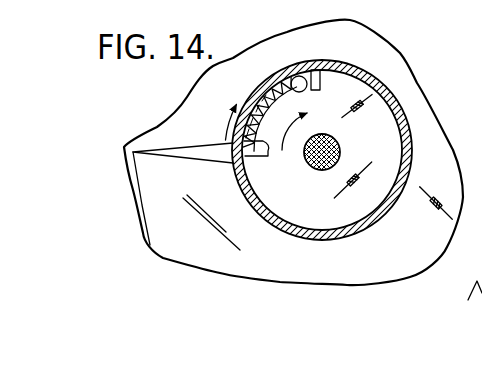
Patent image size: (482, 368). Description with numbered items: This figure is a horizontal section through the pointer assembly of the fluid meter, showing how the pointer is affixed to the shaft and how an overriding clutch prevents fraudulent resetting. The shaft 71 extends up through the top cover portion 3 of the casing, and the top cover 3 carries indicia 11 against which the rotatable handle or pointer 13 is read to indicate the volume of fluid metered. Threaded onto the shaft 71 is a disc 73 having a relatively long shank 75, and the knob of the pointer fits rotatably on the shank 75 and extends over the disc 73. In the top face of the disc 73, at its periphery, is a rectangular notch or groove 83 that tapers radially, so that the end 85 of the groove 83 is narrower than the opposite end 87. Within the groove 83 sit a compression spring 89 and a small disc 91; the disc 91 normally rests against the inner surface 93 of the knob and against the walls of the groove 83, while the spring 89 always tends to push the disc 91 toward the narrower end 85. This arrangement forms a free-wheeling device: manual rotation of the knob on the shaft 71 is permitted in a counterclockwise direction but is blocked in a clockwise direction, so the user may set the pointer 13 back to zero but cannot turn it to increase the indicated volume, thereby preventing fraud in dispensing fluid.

The top cover portion 3 is at (221, 261).
The indicia 11 is at (170, 217).
The pointer 13 is at (187, 155).
The shaft 71 is at (312, 168).
The disc 73 is at (345, 213).
The shank 75 is at (342, 152).
The groove 83 is at (290, 93).
The narrower end of groove 85 is at (316, 72).
The wider end of groove 87 is at (285, 157).
The compression spring 89 is at (263, 94).
The disc 91 is at (296, 76).
The inner surface of knob 93 is at (303, 72).